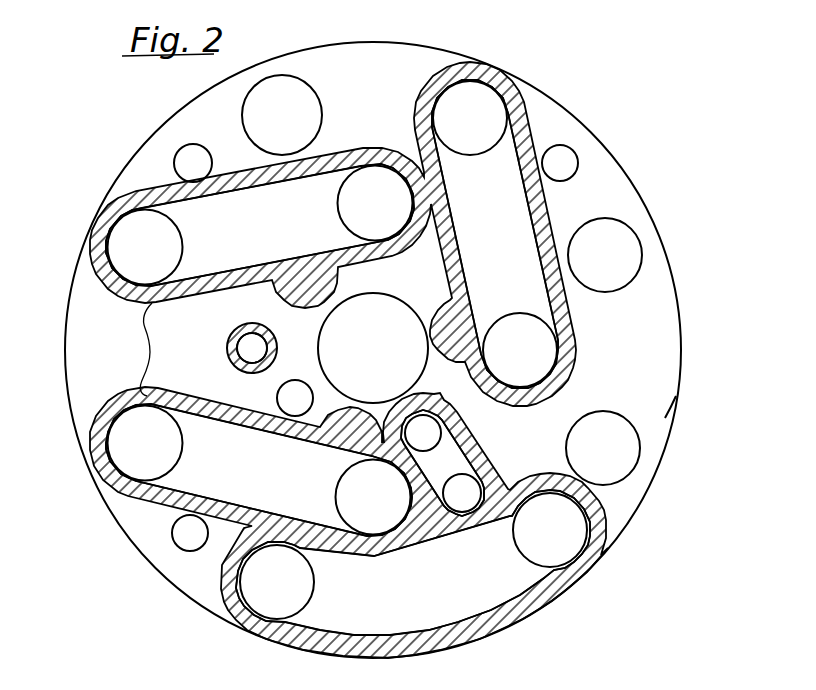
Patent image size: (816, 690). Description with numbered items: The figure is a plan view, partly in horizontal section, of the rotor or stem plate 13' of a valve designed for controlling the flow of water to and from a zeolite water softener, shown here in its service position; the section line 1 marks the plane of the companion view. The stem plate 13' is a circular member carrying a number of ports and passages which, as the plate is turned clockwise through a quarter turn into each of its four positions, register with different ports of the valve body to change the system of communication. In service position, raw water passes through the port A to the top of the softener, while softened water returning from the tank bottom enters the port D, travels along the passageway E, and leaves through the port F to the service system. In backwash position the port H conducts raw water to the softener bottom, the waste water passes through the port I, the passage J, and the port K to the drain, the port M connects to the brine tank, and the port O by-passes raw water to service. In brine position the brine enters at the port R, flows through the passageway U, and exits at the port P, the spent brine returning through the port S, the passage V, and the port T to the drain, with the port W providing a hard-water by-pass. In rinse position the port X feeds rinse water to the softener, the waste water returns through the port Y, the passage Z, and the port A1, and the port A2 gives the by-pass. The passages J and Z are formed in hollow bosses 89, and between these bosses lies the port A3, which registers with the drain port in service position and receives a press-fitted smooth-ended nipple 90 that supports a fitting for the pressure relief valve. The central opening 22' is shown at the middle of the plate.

The port A is at (303, 97).
The port W is at (199, 152).
The port Y is at (145, 247).
The passage Z is at (260, 225).
The port A1 is at (375, 203).
The port S is at (470, 118).
The passage V is at (495, 234).
The port O is at (573, 171).
The port X is at (605, 255).
The port T is at (520, 350).
The central shaft bore 22' is at (373, 333).
The hollow bosses 89 is at (130, 349).
The port A3 is at (236, 332).
The smooth-ended nipple 90 is at (272, 345).
The port M is at (277, 397).
The stem plate 13' is at (693, 408).
The port I is at (145, 443).
The passage J is at (259, 470).
The port K is at (373, 497).
The port R is at (443, 443).
The passageway U is at (442, 463).
The port P is at (462, 512).
The port H is at (603, 448).
The port F is at (550, 530).
The port D is at (277, 582).
The passageway E is at (413, 562).
The port A2 is at (184, 550).
The section line 1 is at (64, 348).